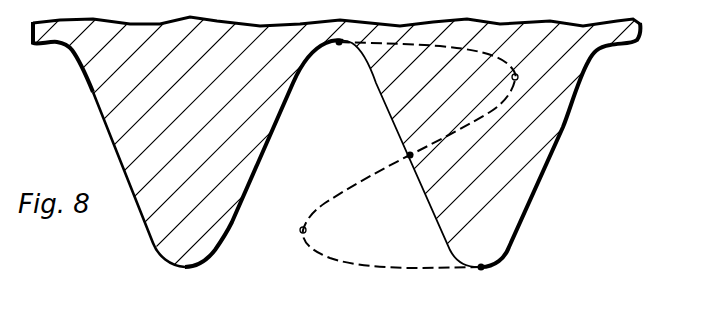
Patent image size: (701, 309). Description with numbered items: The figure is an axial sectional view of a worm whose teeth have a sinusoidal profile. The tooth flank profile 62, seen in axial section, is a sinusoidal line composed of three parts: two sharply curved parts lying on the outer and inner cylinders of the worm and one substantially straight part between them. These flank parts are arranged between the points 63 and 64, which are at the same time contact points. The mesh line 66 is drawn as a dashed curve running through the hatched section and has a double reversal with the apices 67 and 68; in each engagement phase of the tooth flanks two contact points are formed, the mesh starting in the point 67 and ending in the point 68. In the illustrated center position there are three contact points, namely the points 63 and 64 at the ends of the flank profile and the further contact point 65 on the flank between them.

The tooth flank profile 62 is at (248, 189).
The end point of tooth flank profile 63 is at (339, 46).
The end point of tooth flank profile 64 is at (481, 271).
The contact point 65 is at (409, 159).
The mesh line 66 is at (488, 49).
The apex of mesh line 67 is at (518, 79).
The apex of mesh line 68 is at (301, 232).